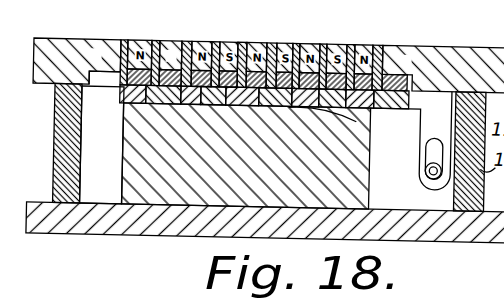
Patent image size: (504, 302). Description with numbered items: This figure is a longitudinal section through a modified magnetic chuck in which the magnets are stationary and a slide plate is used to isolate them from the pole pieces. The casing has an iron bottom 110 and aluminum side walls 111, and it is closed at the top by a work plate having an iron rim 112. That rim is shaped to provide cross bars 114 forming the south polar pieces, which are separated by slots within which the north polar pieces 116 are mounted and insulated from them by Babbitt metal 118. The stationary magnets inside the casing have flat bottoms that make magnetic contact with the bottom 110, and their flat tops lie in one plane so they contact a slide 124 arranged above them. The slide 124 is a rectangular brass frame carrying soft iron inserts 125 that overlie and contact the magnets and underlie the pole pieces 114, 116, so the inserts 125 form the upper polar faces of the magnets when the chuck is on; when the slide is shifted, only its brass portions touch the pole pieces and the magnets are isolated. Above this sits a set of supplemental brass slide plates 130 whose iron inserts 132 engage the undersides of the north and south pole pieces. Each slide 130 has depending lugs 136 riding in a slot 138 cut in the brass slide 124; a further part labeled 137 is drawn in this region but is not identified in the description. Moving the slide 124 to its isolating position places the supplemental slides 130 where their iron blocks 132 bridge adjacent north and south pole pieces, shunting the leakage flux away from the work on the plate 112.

The iron bottom 110 is at (94, 233).
The aluminum side walls 111 is at (60, 146).
The iron rim of the work plate 112 is at (75, 35).
The south polar pieces 114 is at (164, 38).
The north polar pieces 116 is at (133, 36).
The Babbitt metal 118 is at (213, 38).
The slide 124 is at (392, 100).
The soft iron inserts 125 is at (238, 99).
The brass slide plates 130 is at (127, 102).
The iron inserts 132 is at (110, 85).
The depending lugs 136 is at (263, 97).
The layer segment 137 is at (285, 104).
The slot 138 is at (290, 102).